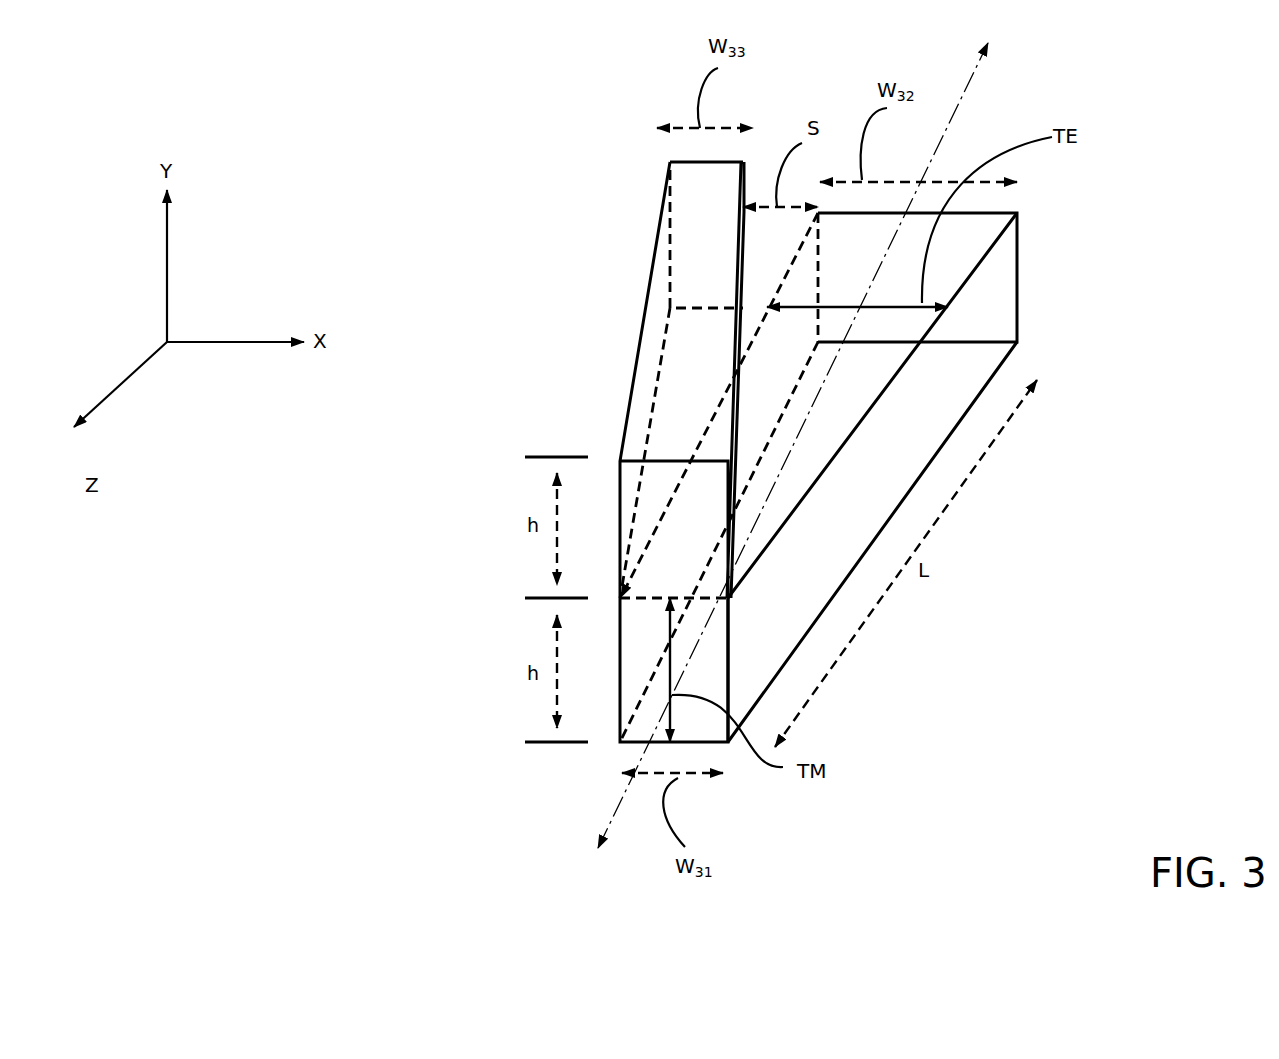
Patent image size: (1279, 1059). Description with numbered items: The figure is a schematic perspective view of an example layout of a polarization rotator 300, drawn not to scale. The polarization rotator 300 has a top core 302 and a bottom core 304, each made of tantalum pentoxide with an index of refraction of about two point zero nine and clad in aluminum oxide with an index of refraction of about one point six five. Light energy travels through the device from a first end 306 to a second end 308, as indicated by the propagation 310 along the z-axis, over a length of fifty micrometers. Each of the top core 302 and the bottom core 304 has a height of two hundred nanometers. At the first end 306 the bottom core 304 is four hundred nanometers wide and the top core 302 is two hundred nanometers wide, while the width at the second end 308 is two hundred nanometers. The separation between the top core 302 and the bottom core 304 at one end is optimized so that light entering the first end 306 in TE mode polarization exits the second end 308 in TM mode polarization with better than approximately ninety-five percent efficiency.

The polarization rotator 300 is at (483, 126).
The top core 302 is at (641, 259).
The bottom core 304 is at (930, 416).
The first end 306 is at (1028, 270).
The second end 308 is at (718, 655).
The propagation 310 is at (612, 802).